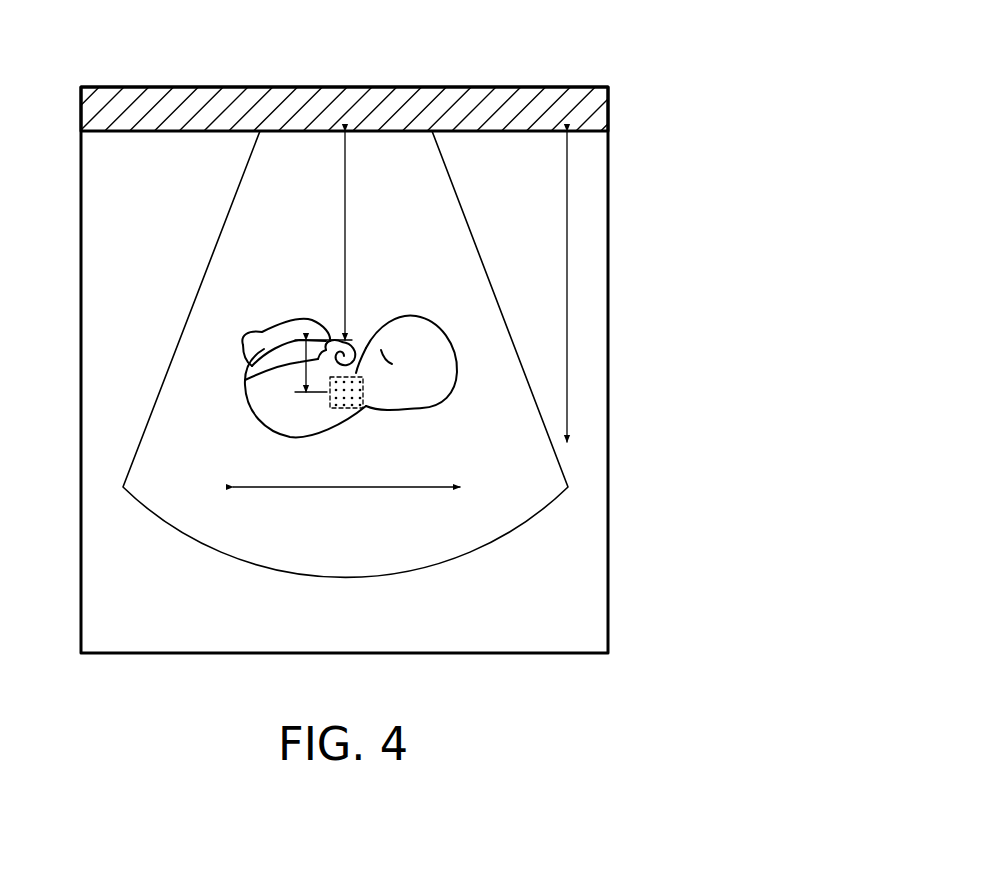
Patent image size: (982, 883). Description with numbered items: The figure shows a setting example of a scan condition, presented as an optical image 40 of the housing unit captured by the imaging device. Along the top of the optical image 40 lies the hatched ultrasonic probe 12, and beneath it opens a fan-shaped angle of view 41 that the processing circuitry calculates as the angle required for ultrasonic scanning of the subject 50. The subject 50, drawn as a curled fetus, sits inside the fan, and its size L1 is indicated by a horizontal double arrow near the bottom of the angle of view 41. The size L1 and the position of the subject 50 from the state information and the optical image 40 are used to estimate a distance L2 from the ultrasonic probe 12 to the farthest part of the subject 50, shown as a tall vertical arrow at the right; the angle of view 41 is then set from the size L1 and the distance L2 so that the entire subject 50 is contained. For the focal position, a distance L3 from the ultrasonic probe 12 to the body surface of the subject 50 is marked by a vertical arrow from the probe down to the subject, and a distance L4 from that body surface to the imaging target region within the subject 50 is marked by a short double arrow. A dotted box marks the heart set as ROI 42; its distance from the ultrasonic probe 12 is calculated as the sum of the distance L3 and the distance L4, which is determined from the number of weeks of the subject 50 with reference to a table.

The optical image 40 is at (624, 59).
The ultrasonic probe 12 is at (82, 101).
The angle of view 41 is at (458, 558).
The ROI 42 is at (363, 398).
The subject 50 is at (433, 330).
The size of the subject L1 is at (345, 490).
The distance from the ultrasonic probe to the farthest part of the subject L2 is at (569, 283).
The distance from the ultrasonic probe to the subject L3 is at (347, 225).
The distance from the body surface of the subject to the imaging target region L4 is at (300, 362).